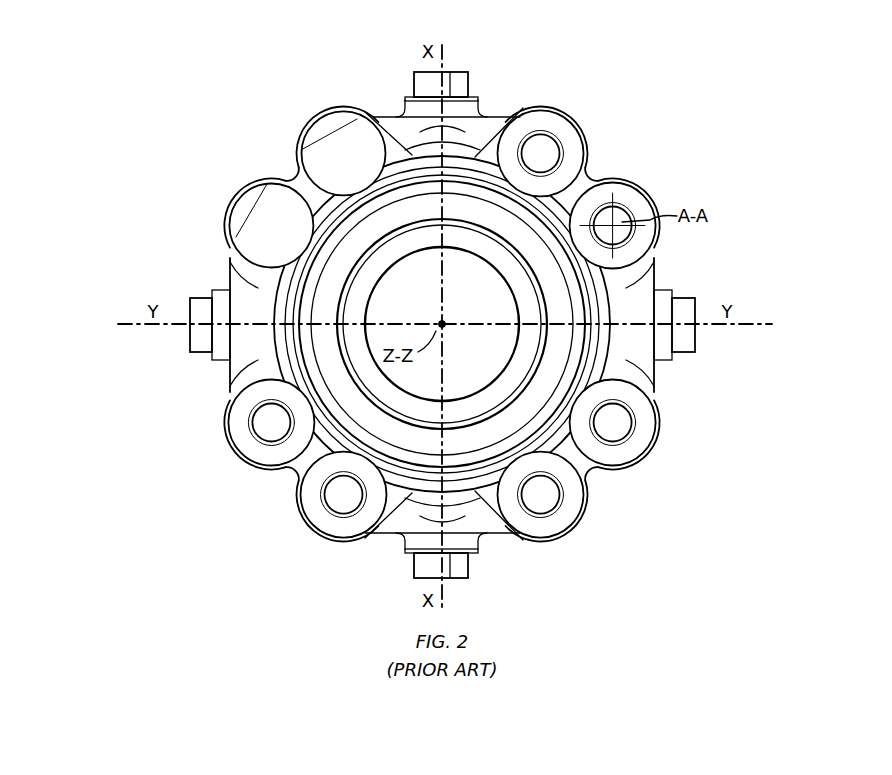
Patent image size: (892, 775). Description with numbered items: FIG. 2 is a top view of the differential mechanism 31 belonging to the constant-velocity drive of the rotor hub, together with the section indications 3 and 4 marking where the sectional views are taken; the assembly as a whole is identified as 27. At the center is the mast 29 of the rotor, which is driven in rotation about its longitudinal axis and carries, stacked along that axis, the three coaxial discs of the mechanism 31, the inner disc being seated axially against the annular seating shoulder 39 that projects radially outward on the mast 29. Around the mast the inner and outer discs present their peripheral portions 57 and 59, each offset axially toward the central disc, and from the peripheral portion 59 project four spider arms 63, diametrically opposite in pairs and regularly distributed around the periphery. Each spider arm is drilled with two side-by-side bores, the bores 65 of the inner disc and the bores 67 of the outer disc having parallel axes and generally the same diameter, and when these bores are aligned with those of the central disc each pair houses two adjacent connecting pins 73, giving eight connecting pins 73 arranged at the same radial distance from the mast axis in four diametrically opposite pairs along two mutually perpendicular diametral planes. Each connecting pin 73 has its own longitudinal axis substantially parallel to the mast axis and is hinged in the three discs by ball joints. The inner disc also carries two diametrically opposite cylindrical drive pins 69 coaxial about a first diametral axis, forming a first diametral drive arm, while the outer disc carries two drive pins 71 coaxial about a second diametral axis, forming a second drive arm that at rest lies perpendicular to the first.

The prior art flow control assembly 27 is at (633, 62).
The mast 29 is at (503, 280).
The differential mechanism 31 is at (246, 168).
The seating shoulder 39 is at (660, 362).
The peripheral portion of inner disc 57 is at (394, 115).
The peripheral portion of outer disc 59 is at (232, 272).
The spider arms of outer disc 63 is at (595, 150).
The bores of inner disc spider arms 65 is at (284, 150).
The bores of outer disc spider arms 67 is at (330, 196).
The drive pins of inner disc 69 is at (470, 86).
The drive pins of outer disc 71 is at (200, 354).
The connecting pin 73 is at (562, 136).
The section line 3 is at (133, 327).
The section line 4 is at (306, 97).